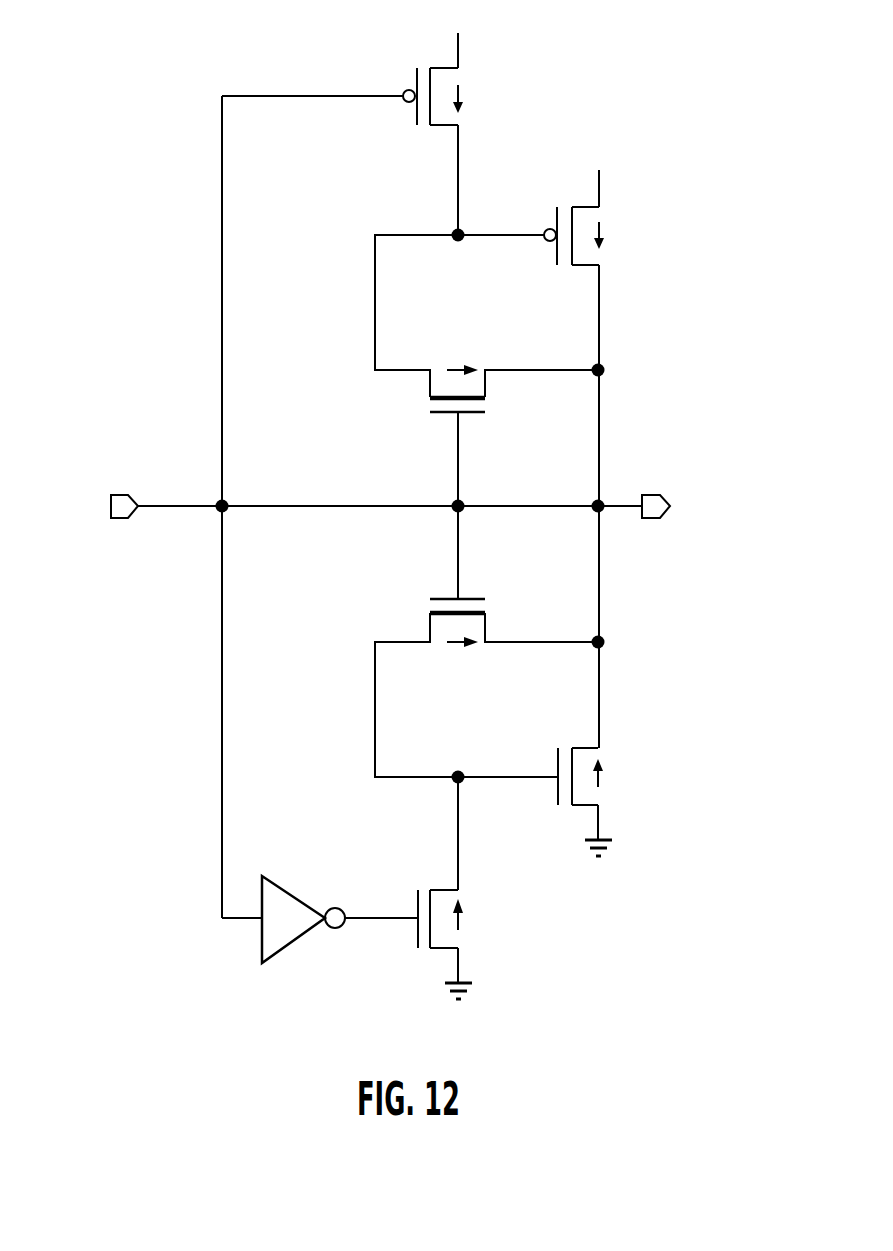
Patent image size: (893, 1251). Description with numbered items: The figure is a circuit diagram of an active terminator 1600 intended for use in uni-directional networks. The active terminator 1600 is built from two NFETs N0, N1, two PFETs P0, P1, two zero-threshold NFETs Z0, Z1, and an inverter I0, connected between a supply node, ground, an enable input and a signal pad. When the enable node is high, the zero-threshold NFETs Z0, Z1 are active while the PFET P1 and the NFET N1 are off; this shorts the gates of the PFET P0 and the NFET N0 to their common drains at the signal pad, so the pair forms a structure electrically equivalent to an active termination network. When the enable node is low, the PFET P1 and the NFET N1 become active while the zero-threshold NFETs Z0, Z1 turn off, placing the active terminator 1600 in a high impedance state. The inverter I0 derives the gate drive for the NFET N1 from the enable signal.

The active terminator 1600 is at (73, 387).
The PFET P1 is at (450, 120).
The PFET P0 is at (549, 444).
The zero-threshold NFET Z0 is at (486, 370).
The zero-threshold NFET Z1 is at (486, 641).
The NFET N0 is at (599, 823).
The NFET N1 is at (421, 909).
The inverter I0 is at (283, 919).